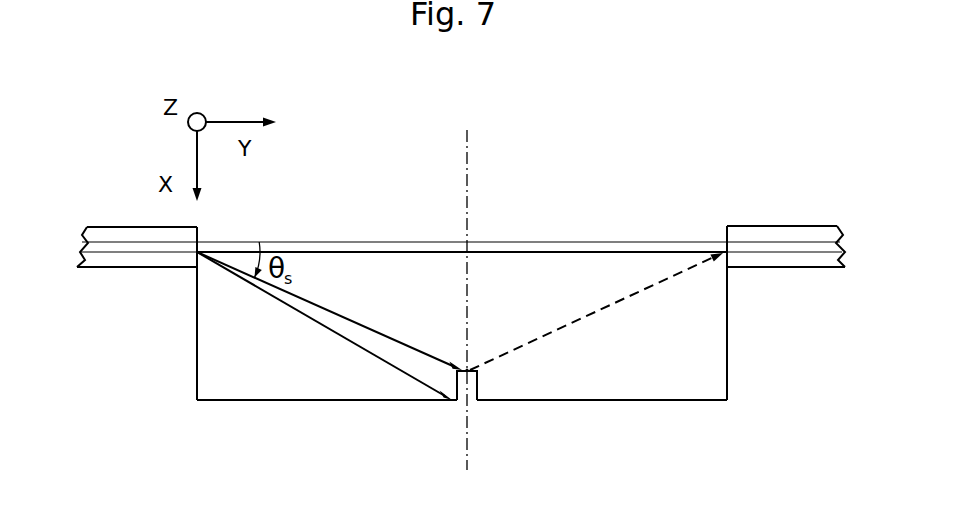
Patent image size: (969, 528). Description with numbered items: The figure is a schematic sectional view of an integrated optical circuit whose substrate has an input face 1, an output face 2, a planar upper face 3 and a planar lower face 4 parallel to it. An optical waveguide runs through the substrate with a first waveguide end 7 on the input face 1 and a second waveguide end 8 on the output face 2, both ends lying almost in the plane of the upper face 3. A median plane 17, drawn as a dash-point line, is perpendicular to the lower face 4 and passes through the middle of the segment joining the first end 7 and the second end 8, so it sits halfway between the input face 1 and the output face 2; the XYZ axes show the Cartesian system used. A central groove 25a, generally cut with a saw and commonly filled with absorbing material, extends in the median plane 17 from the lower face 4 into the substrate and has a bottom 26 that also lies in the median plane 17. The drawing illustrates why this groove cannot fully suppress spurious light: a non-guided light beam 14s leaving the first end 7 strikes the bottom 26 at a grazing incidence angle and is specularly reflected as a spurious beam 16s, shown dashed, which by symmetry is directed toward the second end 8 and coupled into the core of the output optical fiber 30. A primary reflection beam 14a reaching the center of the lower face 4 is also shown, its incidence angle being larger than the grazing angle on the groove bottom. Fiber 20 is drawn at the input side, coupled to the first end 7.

The input face 1 is at (197, 368).
The output face 2 is at (727, 355).
The upper face 3 is at (688, 241).
The lower face 4 is at (223, 401).
The first waveguide end 7 is at (198, 253).
The second waveguide end 8 is at (723, 255).
The non-guided light beam 14s is at (328, 308).
The primary reflection beam 14a is at (365, 352).
The spurious beam 16s is at (613, 303).
The median plane 17 is at (465, 180).
The left flange 20 is at (125, 257).
The output optical fiber 30 is at (764, 235).
The central groove 25a is at (478, 385).
The bottom of the central groove 26 is at (514, 251).